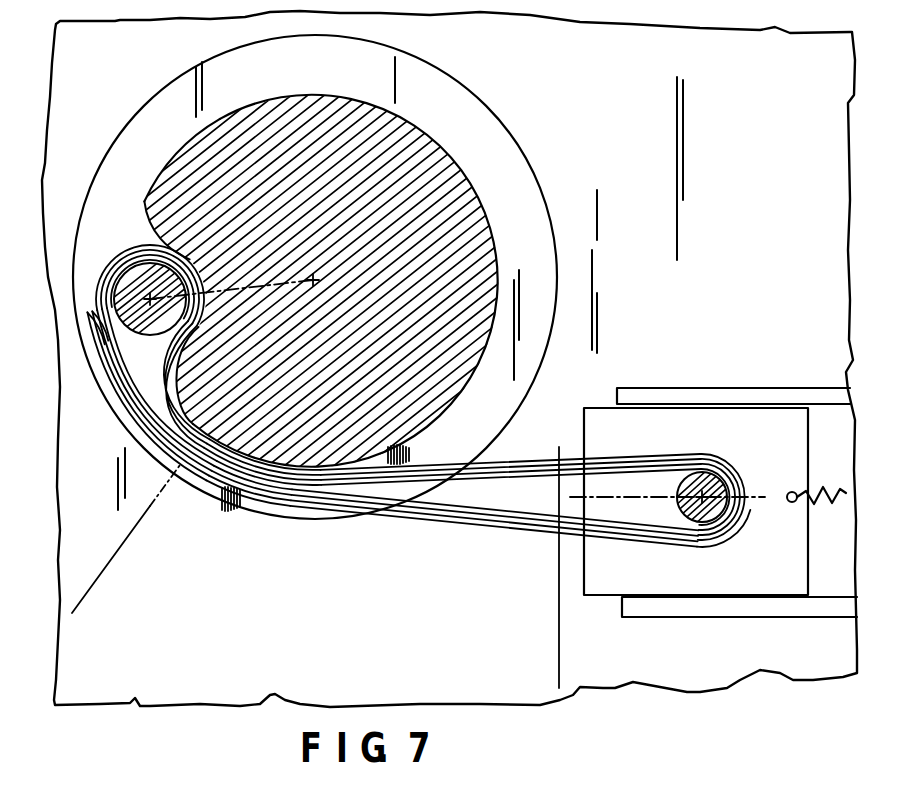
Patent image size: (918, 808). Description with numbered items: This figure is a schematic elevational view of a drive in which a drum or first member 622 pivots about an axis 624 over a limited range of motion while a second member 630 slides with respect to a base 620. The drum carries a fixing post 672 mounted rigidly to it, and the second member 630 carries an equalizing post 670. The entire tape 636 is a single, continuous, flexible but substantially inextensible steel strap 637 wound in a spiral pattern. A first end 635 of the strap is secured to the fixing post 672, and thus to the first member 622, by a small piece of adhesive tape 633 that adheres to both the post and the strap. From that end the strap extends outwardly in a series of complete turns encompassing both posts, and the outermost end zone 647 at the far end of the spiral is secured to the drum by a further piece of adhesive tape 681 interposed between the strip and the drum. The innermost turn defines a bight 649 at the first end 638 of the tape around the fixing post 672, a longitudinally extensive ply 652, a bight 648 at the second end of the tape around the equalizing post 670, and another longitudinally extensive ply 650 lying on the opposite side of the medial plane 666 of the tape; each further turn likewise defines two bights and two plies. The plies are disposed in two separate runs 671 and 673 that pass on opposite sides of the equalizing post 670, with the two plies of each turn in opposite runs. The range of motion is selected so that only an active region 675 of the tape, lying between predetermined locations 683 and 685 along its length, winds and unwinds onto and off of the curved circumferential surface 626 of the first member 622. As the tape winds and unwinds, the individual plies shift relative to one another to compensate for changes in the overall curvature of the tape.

The base 620 is at (632, 52).
The first member 622 is at (427, 163).
The axis 624 is at (463, 178).
The curved circumferential surface 626 is at (448, 408).
The second member 630 is at (720, 517).
The adhesive tape 633 is at (150, 336).
The first end of strap 635 is at (145, 340).
The tape 636 is at (413, 522).
The steel strap 637 is at (460, 522).
The first end of tape 638 is at (170, 452).
The outermost end zone 647 is at (143, 248).
The bight 648 is at (725, 512).
The bight 649 is at (142, 242).
The longitudinally extensive ply 650 is at (603, 477).
The longitudinally extensive ply 652 is at (516, 500).
The medial plane 666 is at (650, 495).
The equalizing post 670 is at (698, 480).
The run 671 is at (593, 455).
The fixing post 672 is at (148, 244).
The run 673 is at (617, 532).
The active region 675 is at (559, 647).
The adhesive tape 681 is at (170, 178).
The predetermined location 683 is at (187, 473).
The predetermined location 685 is at (585, 567).